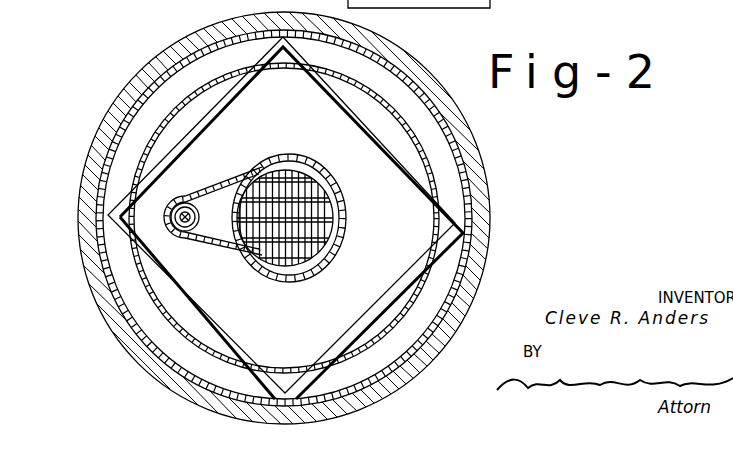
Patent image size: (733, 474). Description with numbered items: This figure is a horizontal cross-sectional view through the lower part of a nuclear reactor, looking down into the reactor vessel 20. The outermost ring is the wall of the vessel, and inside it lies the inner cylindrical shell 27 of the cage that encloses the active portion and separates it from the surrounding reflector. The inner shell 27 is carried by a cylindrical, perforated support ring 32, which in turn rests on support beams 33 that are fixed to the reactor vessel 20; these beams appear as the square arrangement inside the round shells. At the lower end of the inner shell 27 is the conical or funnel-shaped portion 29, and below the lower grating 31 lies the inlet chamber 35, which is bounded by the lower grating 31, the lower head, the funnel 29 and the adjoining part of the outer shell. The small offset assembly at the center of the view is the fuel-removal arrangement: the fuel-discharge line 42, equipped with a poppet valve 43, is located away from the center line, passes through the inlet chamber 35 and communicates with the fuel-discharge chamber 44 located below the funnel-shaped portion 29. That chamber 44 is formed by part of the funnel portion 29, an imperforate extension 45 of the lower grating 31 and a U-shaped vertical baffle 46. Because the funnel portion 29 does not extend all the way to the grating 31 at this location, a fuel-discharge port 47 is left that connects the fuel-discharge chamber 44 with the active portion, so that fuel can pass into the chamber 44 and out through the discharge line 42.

The reactor vessel 20 is at (93, 60).
The inner cylindrical shell 27 is at (187, 95).
The funnel-shaped portion 29 is at (333, 205).
The lower grating 31 is at (318, 226).
The support ring 32 is at (142, 148).
The support beams 33 is at (338, 98).
The inlet chamber 35 is at (303, 325).
The fuel-discharge line 42 is at (197, 236).
The poppet valve 43 is at (186, 224).
The fuel-discharge chamber 44 is at (213, 211).
The imperforate extension 45 is at (216, 200).
The U-shaped vertical baffle 46 is at (187, 196).
The fuel-discharge port 47 is at (234, 251).